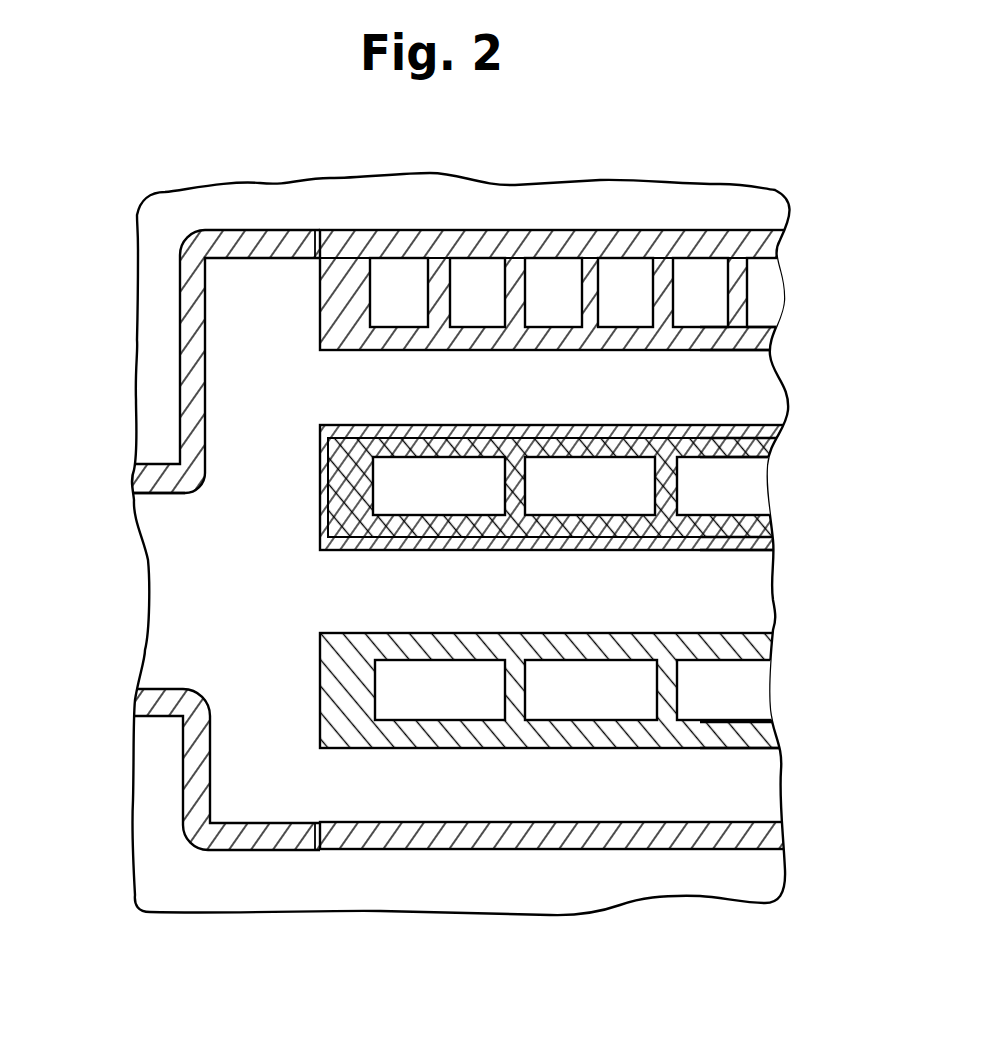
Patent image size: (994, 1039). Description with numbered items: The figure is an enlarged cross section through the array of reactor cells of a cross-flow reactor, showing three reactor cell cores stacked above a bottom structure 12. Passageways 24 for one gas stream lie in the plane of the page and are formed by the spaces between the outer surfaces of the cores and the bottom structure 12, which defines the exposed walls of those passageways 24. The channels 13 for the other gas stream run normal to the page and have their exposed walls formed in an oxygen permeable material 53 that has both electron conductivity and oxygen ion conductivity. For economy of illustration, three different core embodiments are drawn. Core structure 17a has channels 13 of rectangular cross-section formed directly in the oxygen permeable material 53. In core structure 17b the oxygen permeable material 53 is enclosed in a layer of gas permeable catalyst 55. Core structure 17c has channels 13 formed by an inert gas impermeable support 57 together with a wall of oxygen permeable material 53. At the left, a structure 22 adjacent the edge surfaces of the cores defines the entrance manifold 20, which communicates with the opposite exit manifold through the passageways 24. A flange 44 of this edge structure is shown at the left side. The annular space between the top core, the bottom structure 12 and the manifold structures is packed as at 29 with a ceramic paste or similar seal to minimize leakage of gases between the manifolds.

The bottom structure 12 is at (595, 848).
The core channels 13 is at (636, 312).
The core structure 17a is at (320, 705).
The core structure 17b is at (320, 499).
The core structure 17c is at (510, 228).
The entrance manifold 20 is at (279, 422).
The structure 22 is at (180, 280).
The passageways 24 is at (619, 409).
The seal 29 is at (315, 230).
The flange 44 is at (132, 481).
The oxygen permeable material 53 is at (718, 345).
The gas permeable catalyst 55 is at (702, 550).
The inert gas impermeable support 57 is at (487, 244).